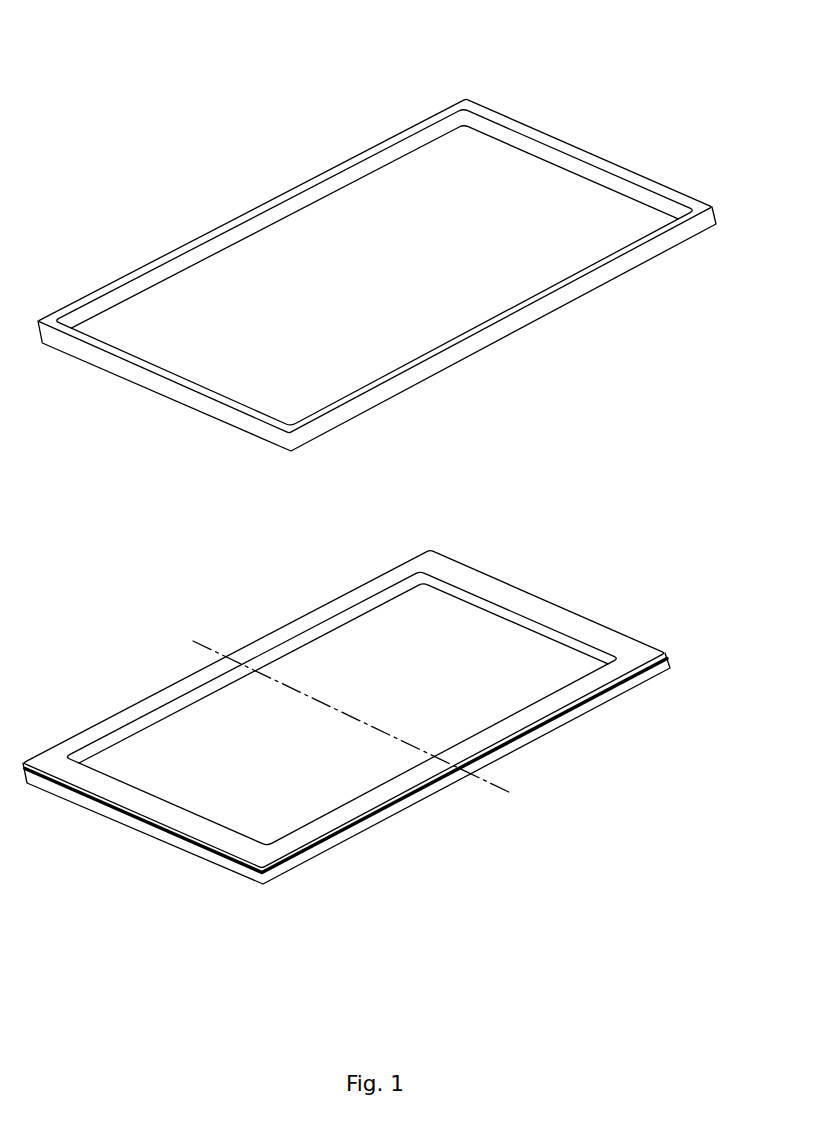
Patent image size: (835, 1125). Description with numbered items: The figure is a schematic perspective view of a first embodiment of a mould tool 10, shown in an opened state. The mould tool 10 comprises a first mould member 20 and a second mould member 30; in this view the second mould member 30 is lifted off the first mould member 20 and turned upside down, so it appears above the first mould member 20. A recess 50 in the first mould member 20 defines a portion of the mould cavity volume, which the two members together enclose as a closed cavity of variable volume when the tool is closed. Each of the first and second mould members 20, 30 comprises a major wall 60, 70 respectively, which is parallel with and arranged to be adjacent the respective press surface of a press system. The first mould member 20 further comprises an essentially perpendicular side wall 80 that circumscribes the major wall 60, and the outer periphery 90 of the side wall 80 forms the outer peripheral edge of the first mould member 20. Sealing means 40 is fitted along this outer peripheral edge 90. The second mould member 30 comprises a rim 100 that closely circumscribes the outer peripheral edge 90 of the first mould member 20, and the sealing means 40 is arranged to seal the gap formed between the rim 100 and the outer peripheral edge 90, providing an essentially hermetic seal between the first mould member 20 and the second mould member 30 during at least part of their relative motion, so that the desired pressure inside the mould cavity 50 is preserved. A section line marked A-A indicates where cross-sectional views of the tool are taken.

The mould tool 10 is at (53, 120).
The first mould member 20 is at (200, 895).
The second mould member 30 is at (282, 162).
The sealing means 40 is at (340, 832).
The recess / mould cavity 50 is at (478, 638).
The major wall of first mould member 60 is at (477, 690).
The major wall of second mould member 70 is at (529, 194).
The side wall 80 is at (625, 643).
The outer periphery / outer peripheral edge 90 is at (655, 673).
The rim 100 is at (619, 169).